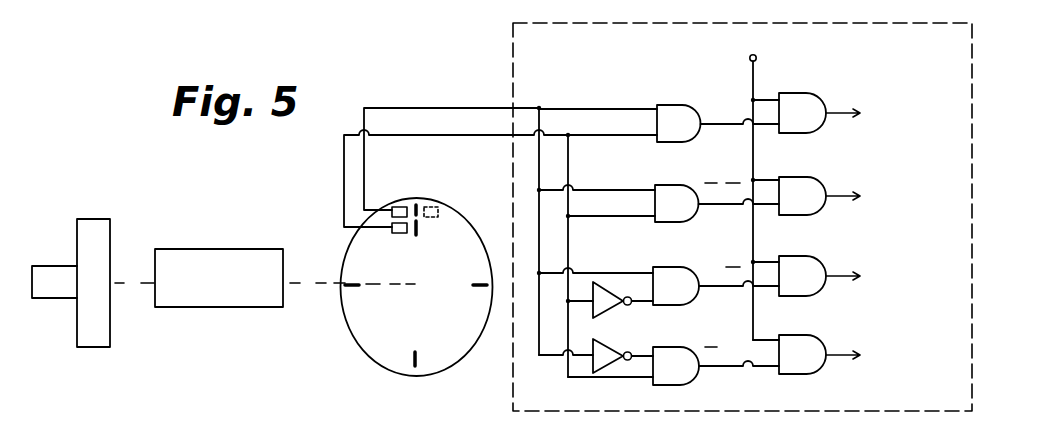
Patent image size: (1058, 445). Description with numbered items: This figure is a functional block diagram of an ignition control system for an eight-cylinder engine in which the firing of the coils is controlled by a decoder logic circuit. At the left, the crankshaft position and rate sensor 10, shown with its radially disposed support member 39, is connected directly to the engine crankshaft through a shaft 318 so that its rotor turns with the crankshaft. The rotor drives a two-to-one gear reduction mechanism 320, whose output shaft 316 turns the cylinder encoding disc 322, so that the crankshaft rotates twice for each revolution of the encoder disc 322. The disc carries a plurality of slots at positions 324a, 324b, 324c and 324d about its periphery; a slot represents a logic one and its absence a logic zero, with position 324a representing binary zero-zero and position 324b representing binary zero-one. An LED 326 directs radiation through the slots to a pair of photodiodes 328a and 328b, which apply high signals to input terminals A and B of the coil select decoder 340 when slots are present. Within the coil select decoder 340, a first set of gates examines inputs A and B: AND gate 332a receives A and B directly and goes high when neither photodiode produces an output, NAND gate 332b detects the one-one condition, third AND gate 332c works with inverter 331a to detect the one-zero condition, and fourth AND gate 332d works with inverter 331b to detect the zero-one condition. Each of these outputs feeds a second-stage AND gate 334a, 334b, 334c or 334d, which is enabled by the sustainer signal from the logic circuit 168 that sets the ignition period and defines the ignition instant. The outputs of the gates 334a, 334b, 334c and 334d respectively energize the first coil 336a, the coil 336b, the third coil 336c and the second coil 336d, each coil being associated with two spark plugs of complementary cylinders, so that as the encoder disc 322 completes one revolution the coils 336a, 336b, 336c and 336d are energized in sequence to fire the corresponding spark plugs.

The crankshaft position and rate sensor 10 is at (106, 216).
The radially disposed support member 39 is at (47, 265).
The shaft coupling 318 is at (139, 282).
The 2:1 gear reduction mechanism 320 is at (248, 248).
The shaft 316 is at (311, 284).
The cylinder encoding disc 322 is at (370, 370).
The slot position 324a is at (352, 289).
The slot position 324b is at (413, 362).
The slot position 324c is at (480, 289).
The slot position 324d is at (417, 238).
The LED 326 is at (440, 208).
The photodiode 328a is at (396, 234).
The photodiode 328b is at (398, 206).
The inverter 331a is at (601, 288).
The inverter 331b is at (614, 351).
The AND gate 332a is at (691, 104).
The NAND gate 332b is at (686, 185).
The third AND gate 332c is at (690, 267).
The fourth AND gate 332d is at (688, 347).
The AND gate 334a is at (826, 83).
The AND gate 334b is at (820, 167).
The AND gate 334c is at (823, 248).
The AND gate 334d is at (825, 328).
The first coil 336a is at (888, 124).
The coil 336b is at (889, 207).
The third coil 336c is at (891, 288).
The second coil 336d is at (890, 366).
The coil select decoder 340 is at (742, 217).
The logic circuit 168 is at (872, 34).